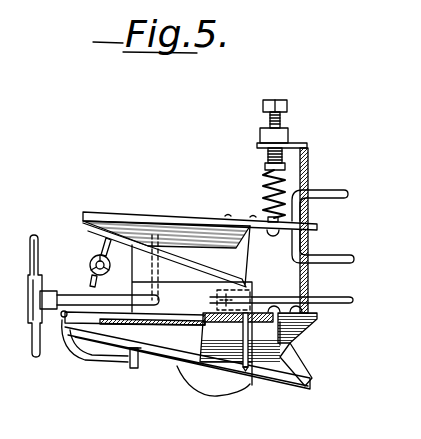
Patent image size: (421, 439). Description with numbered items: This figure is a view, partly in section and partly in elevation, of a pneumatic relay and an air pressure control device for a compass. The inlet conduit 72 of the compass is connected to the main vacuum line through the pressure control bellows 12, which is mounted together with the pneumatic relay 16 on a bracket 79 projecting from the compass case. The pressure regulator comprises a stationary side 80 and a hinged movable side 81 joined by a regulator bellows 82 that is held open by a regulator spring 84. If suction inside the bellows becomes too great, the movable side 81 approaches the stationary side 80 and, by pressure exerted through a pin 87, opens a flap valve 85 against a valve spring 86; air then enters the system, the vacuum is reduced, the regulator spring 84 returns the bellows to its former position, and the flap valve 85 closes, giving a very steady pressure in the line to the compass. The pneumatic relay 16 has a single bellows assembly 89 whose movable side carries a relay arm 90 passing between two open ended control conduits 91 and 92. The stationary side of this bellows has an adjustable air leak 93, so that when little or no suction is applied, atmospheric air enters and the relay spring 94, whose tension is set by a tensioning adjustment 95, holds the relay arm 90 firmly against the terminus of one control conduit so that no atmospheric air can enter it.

The pressure control bellows 12 is at (135, 328).
The pneumatic relay 16 is at (232, 258).
The inlet conduit 72 is at (352, 303).
The bracket 79 is at (196, 308).
The stationary side 80 is at (310, 318).
The hinged movable side 81 is at (152, 345).
The regulator bellows 82 is at (292, 365).
The regulator spring 84 is at (117, 368).
The flap valve 85 is at (290, 390).
The valve spring 86 is at (215, 397).
The pin 87 is at (248, 385).
The bellows assembly 89 is at (150, 218).
The relay arm 90 is at (318, 227).
The control conduit 91 is at (325, 190).
The control conduit 92 is at (340, 257).
The air leak 93 is at (100, 243).
The relay spring 94 is at (265, 190).
The tensioning adjustment 95 is at (278, 135).